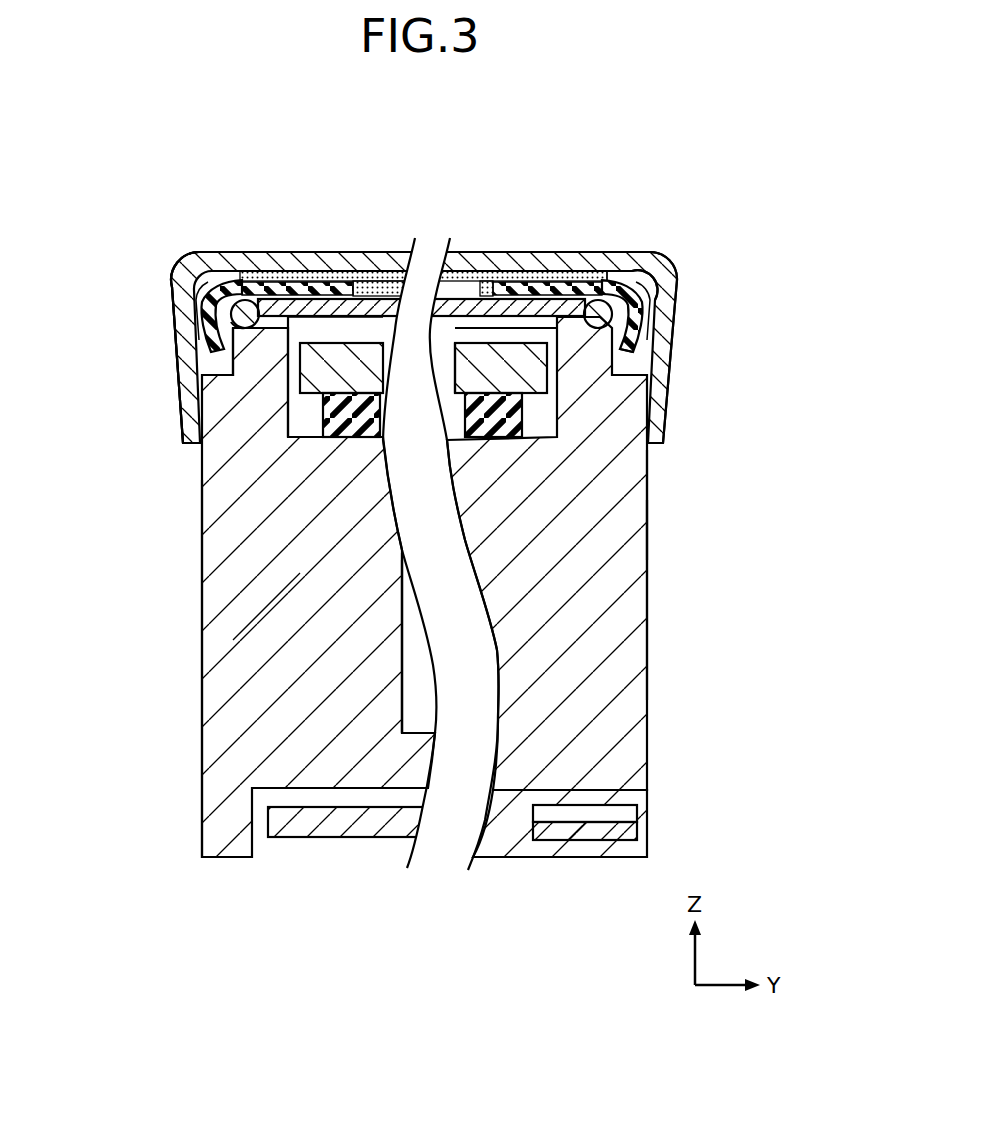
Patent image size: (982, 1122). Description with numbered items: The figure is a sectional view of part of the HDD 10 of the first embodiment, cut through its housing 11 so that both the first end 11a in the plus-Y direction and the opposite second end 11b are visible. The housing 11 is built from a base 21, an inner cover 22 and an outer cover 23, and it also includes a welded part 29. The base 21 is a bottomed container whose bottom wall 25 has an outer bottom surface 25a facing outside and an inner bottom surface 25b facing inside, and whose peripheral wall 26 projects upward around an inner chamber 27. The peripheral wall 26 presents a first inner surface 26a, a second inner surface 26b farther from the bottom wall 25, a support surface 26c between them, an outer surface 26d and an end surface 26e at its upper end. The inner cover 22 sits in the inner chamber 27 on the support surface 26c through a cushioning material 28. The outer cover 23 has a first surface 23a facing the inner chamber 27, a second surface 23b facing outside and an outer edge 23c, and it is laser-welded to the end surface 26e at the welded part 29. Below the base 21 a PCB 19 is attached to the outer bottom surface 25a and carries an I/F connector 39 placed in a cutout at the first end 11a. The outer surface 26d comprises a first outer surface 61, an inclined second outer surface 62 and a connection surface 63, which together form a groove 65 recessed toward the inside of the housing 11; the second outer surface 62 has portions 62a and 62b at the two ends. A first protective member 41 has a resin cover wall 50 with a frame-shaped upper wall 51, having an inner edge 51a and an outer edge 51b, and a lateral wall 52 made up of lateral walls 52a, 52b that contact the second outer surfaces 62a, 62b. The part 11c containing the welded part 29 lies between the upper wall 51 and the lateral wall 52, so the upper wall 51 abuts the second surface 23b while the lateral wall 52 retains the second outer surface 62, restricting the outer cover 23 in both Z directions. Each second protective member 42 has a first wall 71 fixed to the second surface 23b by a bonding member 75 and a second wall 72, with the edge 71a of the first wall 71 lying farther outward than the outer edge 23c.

The HDD 10 is at (186, 148).
The housing 11 is at (196, 768).
The first end 11a is at (647, 600).
The second end 11b is at (396, 656).
The part 11c is at (632, 316).
The printed circuit board 19 is at (292, 836).
The base 21 is at (333, 587).
The inner cover 22 is at (437, 268).
The outer cover 23 is at (405, 321).
The first surface 23a is at (457, 367).
The second surface 23b is at (565, 290).
The outer edge 23c is at (217, 300).
The bottom wall 25 is at (354, 836).
The outer bottom surface 25a is at (320, 790).
The inner bottom surface 25b is at (420, 736).
The peripheral wall 26 is at (237, 715).
The first inner surface 26a is at (403, 693).
The second inner surface 26b is at (306, 316).
The support surface 26c is at (300, 336).
The outer surface 26d is at (202, 567).
The end surface 26e is at (282, 322).
The inner chamber 27 is at (282, 660).
The cushioning material 28 is at (327, 412).
The welded part 29 is at (232, 321).
The I/F connector 39 is at (515, 845).
The first protective member 41 is at (428, 299).
The second protective member 42 is at (172, 408).
The cover wall 50 is at (428, 299).
The upper wall 51 is at (449, 211).
The inner edge 51a is at (524, 275).
The outer edge 51b is at (628, 272).
The lateral wall 52 is at (435, 326).
The lateral wall 52a is at (641, 330).
The lateral wall 52b is at (218, 340).
The first outer surface 61 is at (647, 543).
The second outer surface 62 is at (446, 341).
The second outer surface 62a is at (645, 360).
The second outer surface 62b is at (211, 365).
The connection surface 63 is at (648, 378).
The groove 65 is at (206, 368).
The first wall 71 is at (265, 262).
The edge 71a is at (170, 273).
The second wall 72 is at (185, 425).
The bonding member 75 is at (390, 299).